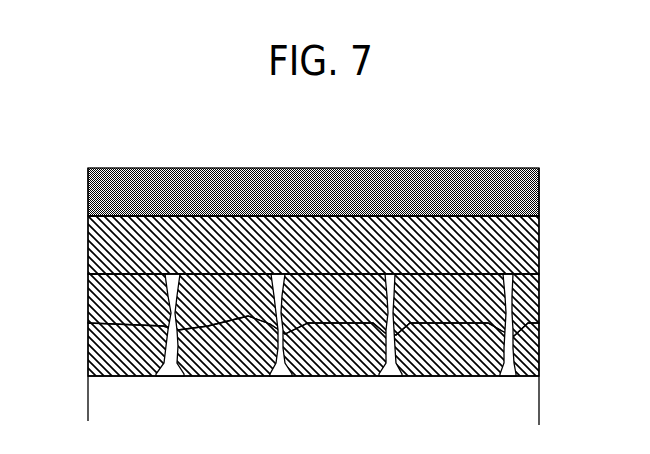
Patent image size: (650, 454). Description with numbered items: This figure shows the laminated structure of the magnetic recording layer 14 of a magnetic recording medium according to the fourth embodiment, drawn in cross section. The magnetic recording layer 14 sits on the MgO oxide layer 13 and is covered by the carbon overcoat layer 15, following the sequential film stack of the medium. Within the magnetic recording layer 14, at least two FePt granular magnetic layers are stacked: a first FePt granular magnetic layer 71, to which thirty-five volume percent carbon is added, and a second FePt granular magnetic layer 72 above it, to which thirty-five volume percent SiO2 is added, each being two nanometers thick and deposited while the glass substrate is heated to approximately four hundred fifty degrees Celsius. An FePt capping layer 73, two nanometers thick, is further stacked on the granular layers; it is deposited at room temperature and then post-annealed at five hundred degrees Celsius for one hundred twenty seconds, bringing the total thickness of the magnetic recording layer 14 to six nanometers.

The MgO oxide layer 13 is at (535, 388).
The magnetic recording layer 14 is at (78, 368).
The carbon overcoat layer 15 is at (533, 184).
The first FePt granular magnetic layer 71 is at (534, 318).
The second FePt granular magnetic layer 72 is at (534, 267).
The FePt capping layer 73 is at (534, 209).